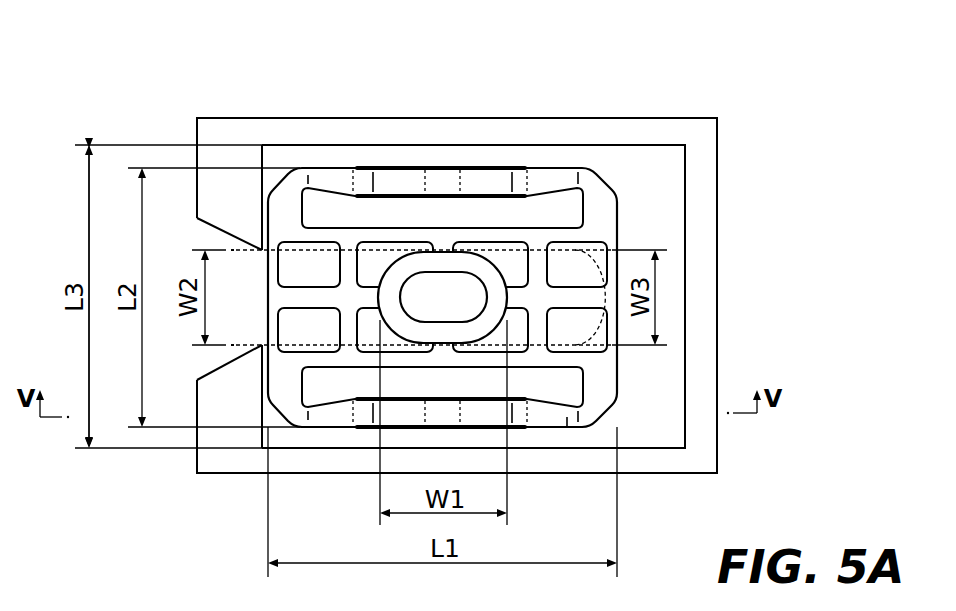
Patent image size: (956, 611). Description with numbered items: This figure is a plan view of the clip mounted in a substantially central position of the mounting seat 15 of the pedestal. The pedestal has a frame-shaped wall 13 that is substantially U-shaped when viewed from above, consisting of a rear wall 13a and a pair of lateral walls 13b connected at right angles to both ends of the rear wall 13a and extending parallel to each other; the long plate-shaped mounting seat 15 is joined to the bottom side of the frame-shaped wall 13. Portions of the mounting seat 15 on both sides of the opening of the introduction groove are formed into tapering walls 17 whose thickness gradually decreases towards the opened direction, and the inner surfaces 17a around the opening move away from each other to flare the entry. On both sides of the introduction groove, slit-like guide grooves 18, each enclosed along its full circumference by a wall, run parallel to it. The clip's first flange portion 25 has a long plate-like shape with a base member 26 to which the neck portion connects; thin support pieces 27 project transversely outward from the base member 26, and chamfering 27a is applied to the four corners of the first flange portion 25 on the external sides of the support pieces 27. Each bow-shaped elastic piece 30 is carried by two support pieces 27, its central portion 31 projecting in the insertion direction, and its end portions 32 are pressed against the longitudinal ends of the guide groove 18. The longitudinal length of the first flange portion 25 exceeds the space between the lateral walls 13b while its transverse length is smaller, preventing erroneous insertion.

The frame-shaped wall 13 is at (260, 116).
The rear wall 13a is at (705, 347).
The lateral wall 13b is at (652, 128).
The mounting seat 15 is at (663, 374).
The tapering wall 17 is at (207, 198).
The inner surface 17a is at (222, 238).
The guide groove 18 is at (493, 167).
The first flange portion 25 is at (627, 212).
The base member 26 is at (614, 243).
The support piece 27 is at (288, 408).
The chamfering 27a is at (607, 182).
The elastic piece 30 is at (430, 166).
The central portion 31 is at (447, 178).
The end portion 32 is at (321, 176).